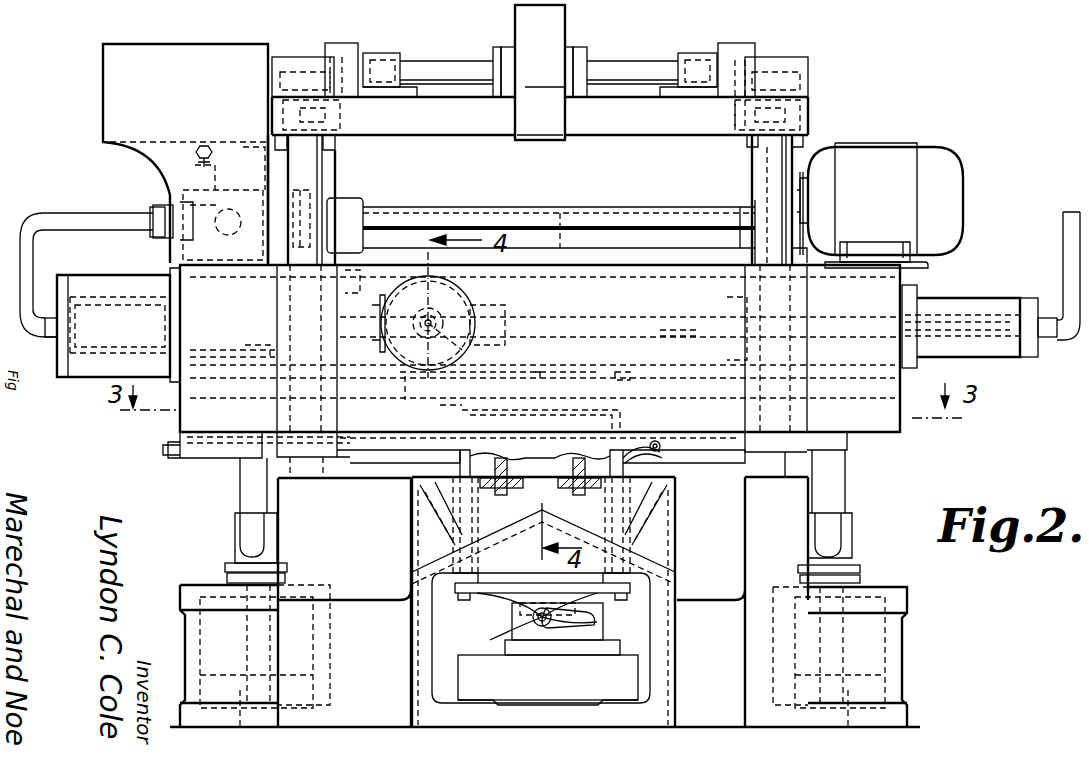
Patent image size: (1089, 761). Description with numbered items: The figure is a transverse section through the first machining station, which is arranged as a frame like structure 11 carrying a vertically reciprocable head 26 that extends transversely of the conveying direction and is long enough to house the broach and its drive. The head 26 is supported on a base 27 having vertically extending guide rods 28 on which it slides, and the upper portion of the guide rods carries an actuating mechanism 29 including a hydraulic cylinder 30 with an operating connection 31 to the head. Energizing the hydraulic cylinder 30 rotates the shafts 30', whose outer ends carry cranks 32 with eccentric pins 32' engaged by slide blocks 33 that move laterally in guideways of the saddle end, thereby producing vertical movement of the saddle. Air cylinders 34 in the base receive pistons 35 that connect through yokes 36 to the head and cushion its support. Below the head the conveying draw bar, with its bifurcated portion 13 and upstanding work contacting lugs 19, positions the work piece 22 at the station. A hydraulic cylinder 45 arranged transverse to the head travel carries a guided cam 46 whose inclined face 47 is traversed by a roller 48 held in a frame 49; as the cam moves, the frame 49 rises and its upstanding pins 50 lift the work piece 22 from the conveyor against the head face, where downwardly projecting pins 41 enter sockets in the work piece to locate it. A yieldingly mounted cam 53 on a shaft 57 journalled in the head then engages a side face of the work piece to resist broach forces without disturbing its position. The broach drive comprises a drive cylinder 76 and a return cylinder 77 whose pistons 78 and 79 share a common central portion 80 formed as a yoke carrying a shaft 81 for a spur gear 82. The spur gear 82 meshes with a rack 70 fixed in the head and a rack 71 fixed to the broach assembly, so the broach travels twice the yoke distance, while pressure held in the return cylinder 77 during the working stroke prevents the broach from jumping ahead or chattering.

The frame like structure 11 is at (333, 530).
The bifurcated portion 13 is at (496, 494).
The work contacting lugs 19 is at (578, 462).
The work piece 22 is at (585, 393).
The head 26 is at (618, 262).
The base 27 is at (369, 720).
The guide rods 28 is at (308, 164).
The actuating mechanism 29 is at (443, 64).
The hydraulic cylinder 30 is at (566, 72).
The shafts 30' is at (540, 53).
The operating connection 31 is at (345, 58).
The cranks 32 is at (522, 66).
The eccentric pins 32' is at (538, 110).
The slide blocks 33 is at (290, 85).
The air cylinders 34 is at (300, 640).
The pistons 35 is at (243, 690).
The yokes 36 is at (250, 488).
The locating pins 41 is at (630, 392).
The hydraulic cylinder 45 is at (547, 727).
The guided cam 46 is at (605, 627).
The inclined face 47 is at (572, 630).
The roller 48 is at (490, 640).
The frame 49 is at (492, 604).
The upstanding pins 50 is at (455, 466).
The cam 53 is at (672, 416).
The shaft 57 is at (665, 440).
The rack 70 is at (562, 260).
The rack 71 is at (245, 377).
The drive cylinder 76 is at (108, 287).
The return cylinder 77 is at (972, 318).
The piston 78 is at (100, 345).
The piston 79 is at (673, 328).
The common central portion 80 is at (505, 318).
The shaft 81 is at (470, 346).
The spur gear 82 is at (470, 305).